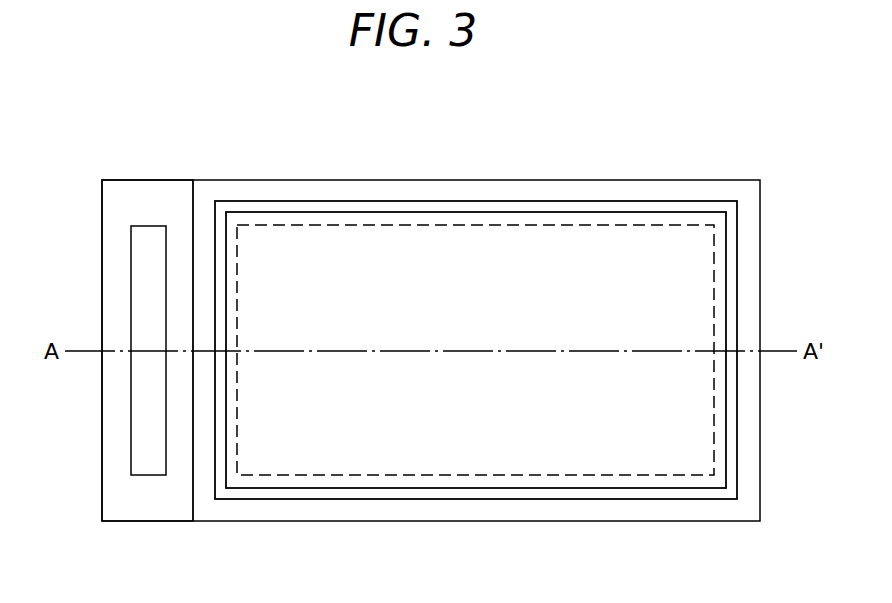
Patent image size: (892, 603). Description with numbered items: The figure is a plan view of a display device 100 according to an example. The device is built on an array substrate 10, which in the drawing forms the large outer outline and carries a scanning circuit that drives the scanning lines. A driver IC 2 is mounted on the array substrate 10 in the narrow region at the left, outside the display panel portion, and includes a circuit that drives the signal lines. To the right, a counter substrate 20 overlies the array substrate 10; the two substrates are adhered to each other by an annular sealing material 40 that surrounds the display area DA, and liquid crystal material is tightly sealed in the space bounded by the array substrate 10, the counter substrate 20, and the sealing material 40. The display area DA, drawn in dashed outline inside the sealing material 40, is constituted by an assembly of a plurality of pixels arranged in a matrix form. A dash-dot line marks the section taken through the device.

The display device 100 is at (401, 122).
The array substrate 10 is at (147, 192).
The driver IC 2 is at (148, 462).
The counter substrate 20 is at (560, 192).
The sealing material 40 is at (578, 499).
The display area DA is at (442, 475).